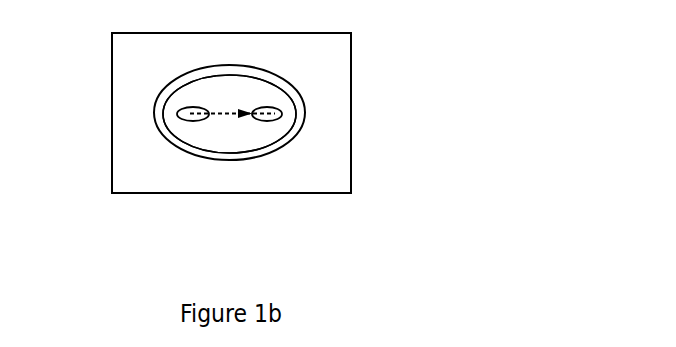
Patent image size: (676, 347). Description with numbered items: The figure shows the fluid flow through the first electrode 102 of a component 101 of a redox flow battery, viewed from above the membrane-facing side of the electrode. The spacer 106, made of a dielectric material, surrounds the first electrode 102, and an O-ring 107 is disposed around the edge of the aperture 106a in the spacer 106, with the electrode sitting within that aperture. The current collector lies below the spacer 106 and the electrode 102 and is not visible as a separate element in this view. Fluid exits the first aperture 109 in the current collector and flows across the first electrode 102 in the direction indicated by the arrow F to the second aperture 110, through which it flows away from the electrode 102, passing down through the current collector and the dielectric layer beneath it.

The microfluidic device 101 is at (99, 218).
The substrate 106 is at (128, 53).
The outer wall of chamber 107 is at (243, 72).
The chamber 102 is at (258, 95).
The inner surface of chamber 106a is at (222, 132).
The inlet port 109 is at (188, 108).
The outlet port 110 is at (274, 106).
The flow direction F is at (226, 110).